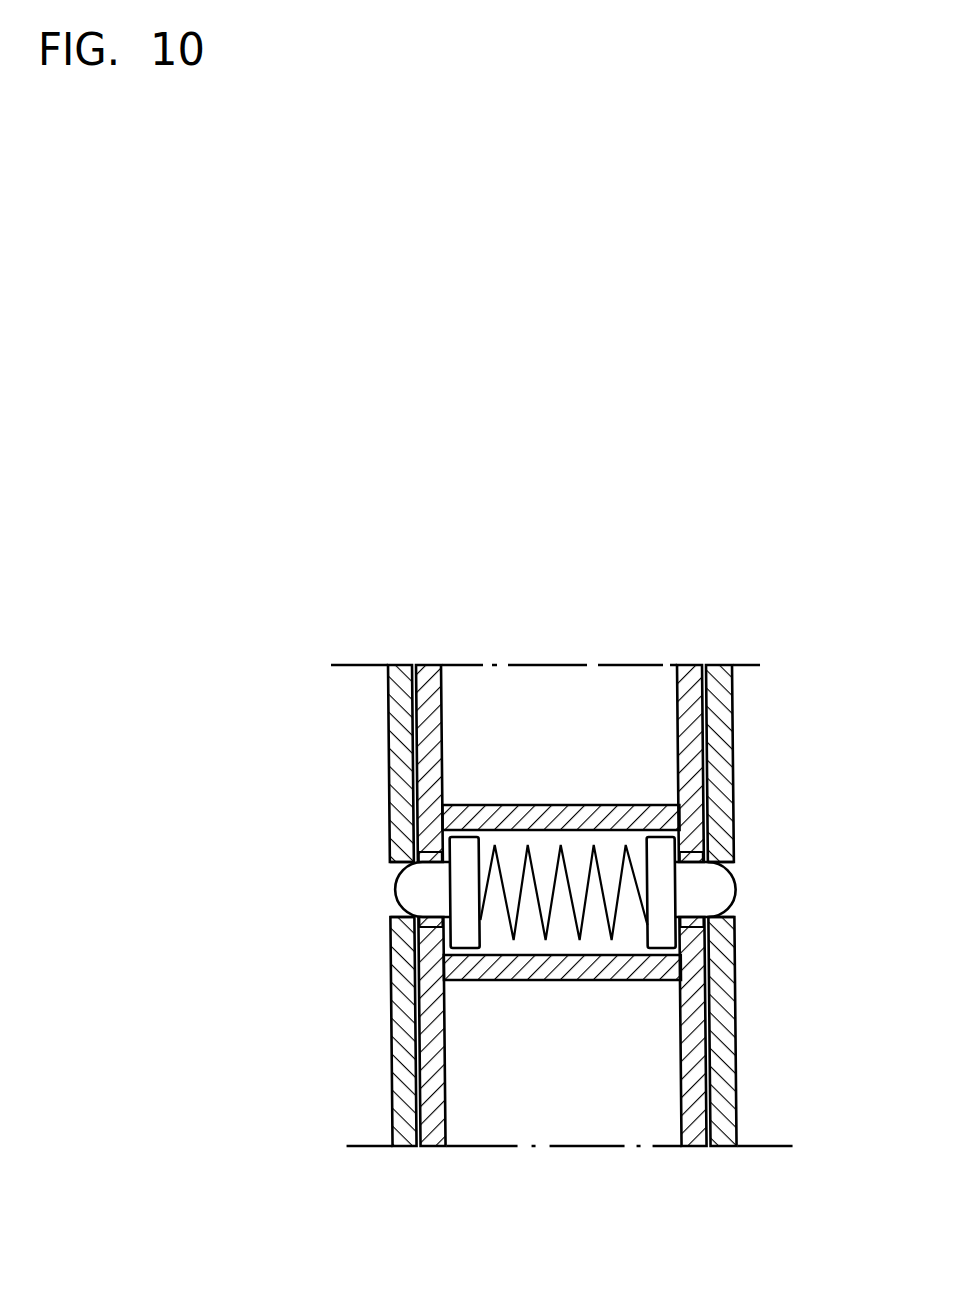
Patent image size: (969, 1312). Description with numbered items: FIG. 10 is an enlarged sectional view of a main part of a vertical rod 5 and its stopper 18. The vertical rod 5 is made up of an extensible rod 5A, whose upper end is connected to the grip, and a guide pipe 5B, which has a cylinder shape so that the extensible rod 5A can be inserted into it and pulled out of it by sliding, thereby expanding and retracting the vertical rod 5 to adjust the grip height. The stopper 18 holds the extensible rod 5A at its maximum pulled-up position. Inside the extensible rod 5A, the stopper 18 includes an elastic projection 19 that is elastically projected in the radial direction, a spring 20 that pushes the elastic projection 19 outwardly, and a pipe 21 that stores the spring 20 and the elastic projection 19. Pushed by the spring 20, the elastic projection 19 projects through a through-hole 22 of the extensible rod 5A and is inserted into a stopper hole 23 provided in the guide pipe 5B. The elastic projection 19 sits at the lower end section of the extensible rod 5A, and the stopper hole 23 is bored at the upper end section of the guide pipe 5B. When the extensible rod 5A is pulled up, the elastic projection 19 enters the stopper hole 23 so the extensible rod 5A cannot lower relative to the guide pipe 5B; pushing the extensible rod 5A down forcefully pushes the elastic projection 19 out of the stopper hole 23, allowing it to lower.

The vertical rod 5 is at (604, 905).
The extensible rod 5A is at (695, 1022).
The guide pipe 5B is at (832, 973).
The stopper 18 is at (567, 866).
The elastic projection 19 is at (415, 904).
The spring 20 is at (535, 862).
The pipe 21 is at (562, 976).
The through-hole 22 is at (436, 857).
The stopper hole 23 is at (391, 883).